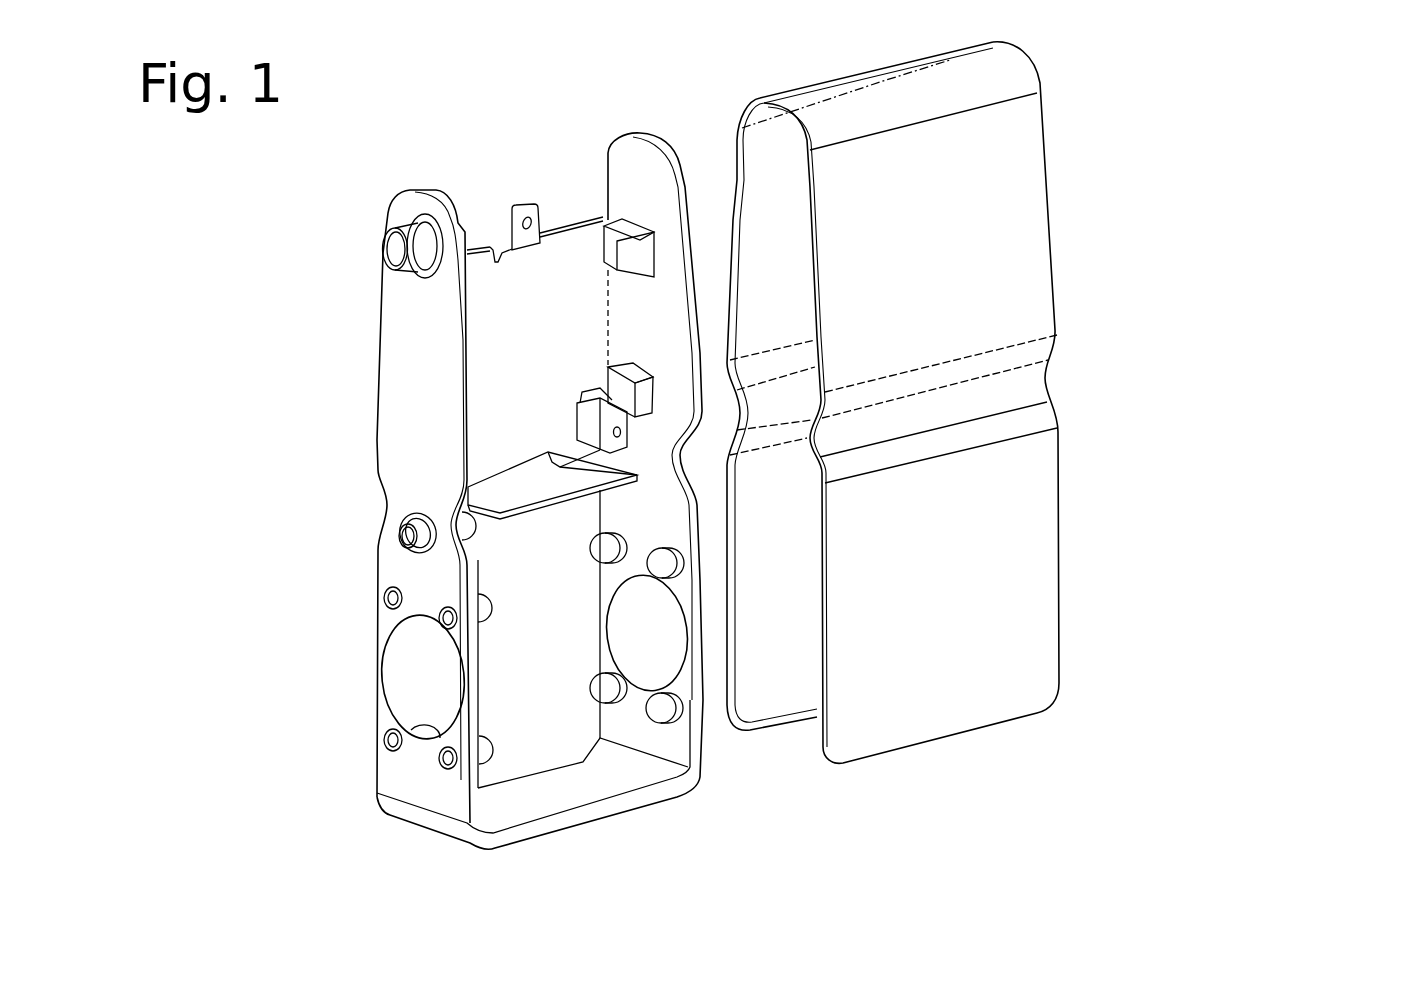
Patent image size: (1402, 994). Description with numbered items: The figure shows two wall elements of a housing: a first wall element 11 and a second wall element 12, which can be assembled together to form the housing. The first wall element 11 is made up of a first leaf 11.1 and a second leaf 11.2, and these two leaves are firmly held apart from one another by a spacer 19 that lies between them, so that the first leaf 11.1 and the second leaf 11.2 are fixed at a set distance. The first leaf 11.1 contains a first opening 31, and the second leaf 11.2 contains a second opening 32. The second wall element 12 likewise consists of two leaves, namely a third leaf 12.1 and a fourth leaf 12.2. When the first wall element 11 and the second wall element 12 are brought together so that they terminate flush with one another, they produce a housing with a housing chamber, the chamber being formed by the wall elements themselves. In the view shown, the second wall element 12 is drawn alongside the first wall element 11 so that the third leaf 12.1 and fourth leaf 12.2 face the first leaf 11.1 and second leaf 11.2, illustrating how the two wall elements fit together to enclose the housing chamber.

The first wall element 11 is at (610, 857).
The first leaf 11.1 is at (400, 445).
The second leaf 11.2 is at (645, 175).
The second wall element 12 is at (1020, 762).
The third leaf 12.1 is at (767, 683).
The fourth leaf 12.2 is at (1025, 599).
The spacer 19 is at (508, 352).
The first opening 31 is at (420, 680).
The second opening 32 is at (645, 635).